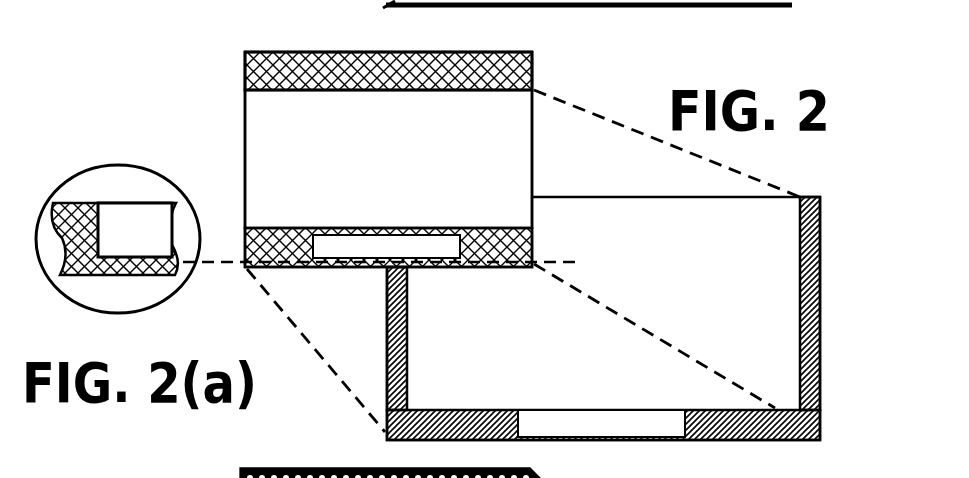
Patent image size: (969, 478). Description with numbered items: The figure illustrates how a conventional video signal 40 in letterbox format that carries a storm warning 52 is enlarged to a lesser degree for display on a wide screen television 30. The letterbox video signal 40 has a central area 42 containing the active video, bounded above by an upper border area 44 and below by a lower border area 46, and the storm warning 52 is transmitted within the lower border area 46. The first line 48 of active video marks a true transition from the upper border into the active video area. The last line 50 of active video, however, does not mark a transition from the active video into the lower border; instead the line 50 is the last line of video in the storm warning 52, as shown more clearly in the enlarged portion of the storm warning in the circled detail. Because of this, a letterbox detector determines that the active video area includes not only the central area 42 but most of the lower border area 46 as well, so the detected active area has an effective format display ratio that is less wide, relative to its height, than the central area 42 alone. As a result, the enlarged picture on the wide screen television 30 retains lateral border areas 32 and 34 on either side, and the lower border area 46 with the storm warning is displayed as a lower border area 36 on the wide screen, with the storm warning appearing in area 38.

In FIG. 2, the wide screen television 30 is at (822, 332).
In FIG. 2, the lateral border area 32 is at (818, 366).
In FIG. 2, the lateral border area 34 is at (389, 318).
In FIG. 2, the lower border area 36 is at (745, 434).
In FIG. 2, the storm warning area 38 is at (597, 439).
In FIG. 2, the video signal 40 is at (243, 160).
In FIG. 2, the central area 42 is at (523, 120).
In FIG. 2, the upper border area 44 is at (312, 52).
In FIG. 2, the lower border area 46 is at (248, 245).
In FIG. 2a, the lower border area 46 is at (100, 268).
In FIG. 2, the first line of active video 48 is at (243, 88).
In FIG. 2, the last line of active video 50 is at (226, 258).
In FIG. 2, the storm warning 52 is at (362, 268).
In FIG. 2a, the storm warning 52 is at (104, 213).